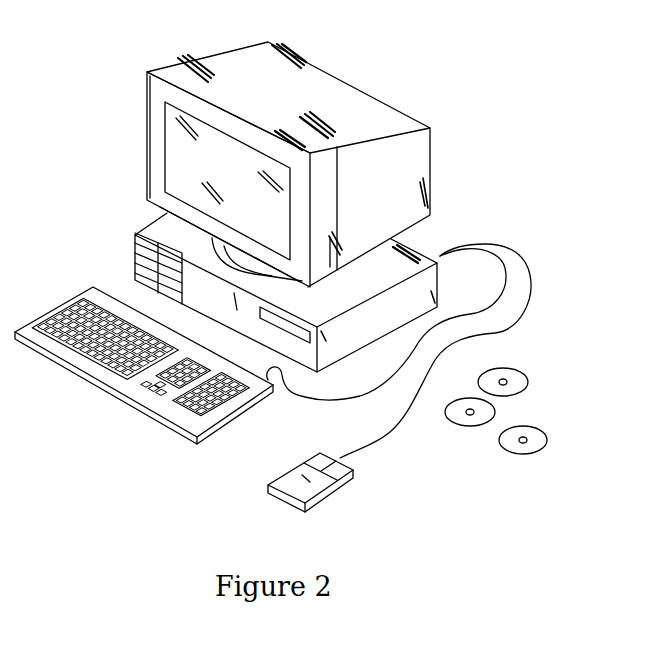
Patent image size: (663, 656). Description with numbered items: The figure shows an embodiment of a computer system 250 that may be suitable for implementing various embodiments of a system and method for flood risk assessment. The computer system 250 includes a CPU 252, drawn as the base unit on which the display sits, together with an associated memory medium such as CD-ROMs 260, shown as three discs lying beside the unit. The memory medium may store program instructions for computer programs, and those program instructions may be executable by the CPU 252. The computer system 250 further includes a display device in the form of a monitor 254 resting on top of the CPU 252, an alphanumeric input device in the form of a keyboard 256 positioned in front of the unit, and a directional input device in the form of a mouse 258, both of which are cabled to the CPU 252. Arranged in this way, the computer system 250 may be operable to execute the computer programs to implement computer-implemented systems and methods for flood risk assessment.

The computer system 250 is at (130, 47).
The CPU 252 is at (149, 226).
The monitor 254 is at (352, 84).
The keyboard 256 is at (101, 390).
The mouse 258 is at (280, 505).
The CD-ROMs 260 is at (530, 455).